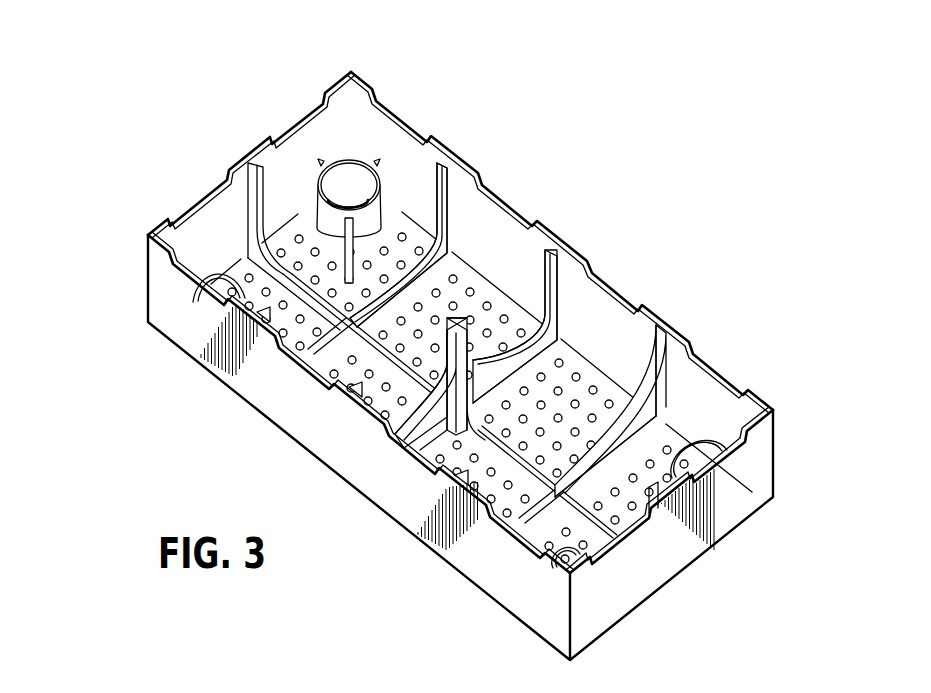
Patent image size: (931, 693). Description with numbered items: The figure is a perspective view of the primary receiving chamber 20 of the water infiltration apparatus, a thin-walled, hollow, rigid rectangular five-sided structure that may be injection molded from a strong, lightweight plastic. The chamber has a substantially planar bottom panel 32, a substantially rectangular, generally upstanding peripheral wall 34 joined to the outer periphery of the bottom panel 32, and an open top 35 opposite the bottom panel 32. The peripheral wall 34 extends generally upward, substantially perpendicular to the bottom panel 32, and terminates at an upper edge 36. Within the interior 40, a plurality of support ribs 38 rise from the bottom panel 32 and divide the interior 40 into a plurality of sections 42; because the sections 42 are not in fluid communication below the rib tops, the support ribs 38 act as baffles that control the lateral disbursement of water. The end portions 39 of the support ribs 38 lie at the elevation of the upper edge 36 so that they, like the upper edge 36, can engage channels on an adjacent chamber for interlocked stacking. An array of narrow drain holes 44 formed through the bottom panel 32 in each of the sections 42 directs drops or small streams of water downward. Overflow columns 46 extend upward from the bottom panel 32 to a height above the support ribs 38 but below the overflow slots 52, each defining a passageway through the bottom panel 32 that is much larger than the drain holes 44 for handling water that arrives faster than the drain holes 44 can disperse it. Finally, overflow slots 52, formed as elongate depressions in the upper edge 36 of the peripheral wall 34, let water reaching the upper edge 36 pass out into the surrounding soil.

The primary receiving chamber 20 is at (140, 156).
The bottom panel 32 is at (481, 262).
The peripheral wall 34 is at (614, 288).
The open top 35 is at (147, 231).
The upper edge 36 is at (662, 341).
The support ribs 38 is at (249, 161).
The end portions 39 is at (262, 143).
The interior 40 is at (374, 118).
The sections 42 is at (408, 205).
The drain holes 44 is at (232, 386).
The overflow columns 46 is at (345, 160).
The overflow slots 52 is at (147, 268).